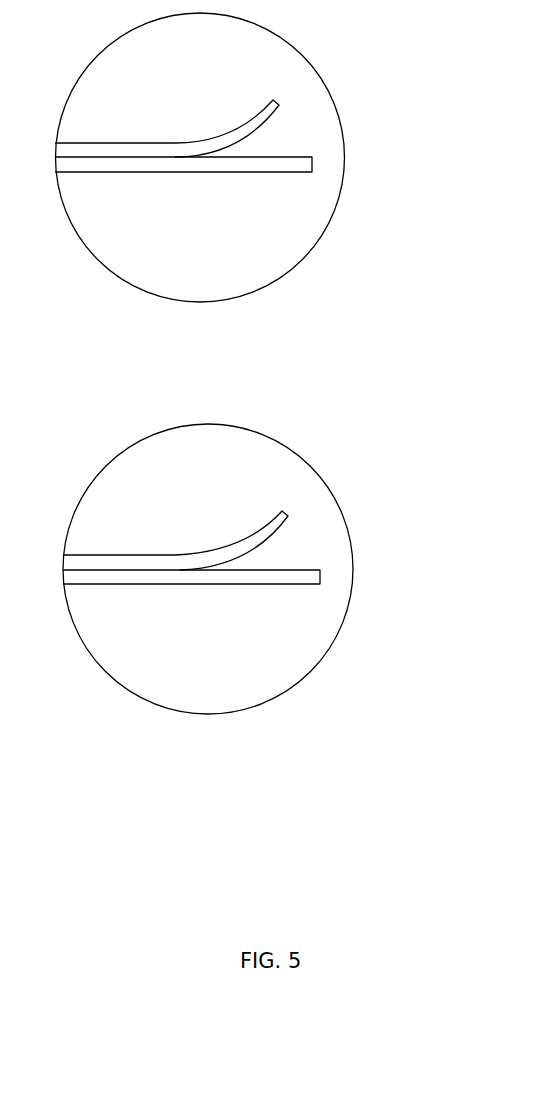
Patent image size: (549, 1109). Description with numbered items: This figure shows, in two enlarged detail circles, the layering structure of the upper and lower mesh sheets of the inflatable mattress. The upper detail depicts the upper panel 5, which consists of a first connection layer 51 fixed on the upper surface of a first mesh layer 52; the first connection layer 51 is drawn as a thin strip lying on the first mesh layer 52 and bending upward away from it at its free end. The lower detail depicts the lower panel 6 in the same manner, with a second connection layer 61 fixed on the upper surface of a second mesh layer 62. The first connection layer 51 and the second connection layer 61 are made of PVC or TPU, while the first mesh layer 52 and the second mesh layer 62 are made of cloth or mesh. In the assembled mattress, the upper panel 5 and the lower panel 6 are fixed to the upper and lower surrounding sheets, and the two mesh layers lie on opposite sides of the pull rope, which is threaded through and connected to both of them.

The upper panel 5 is at (253, 109).
The first connection layer 51 is at (279, 105).
The first mesh layer 52 is at (290, 167).
The lower panel 6 is at (262, 519).
The second connection layer 61 is at (288, 516).
The second mesh layer 62 is at (300, 580).